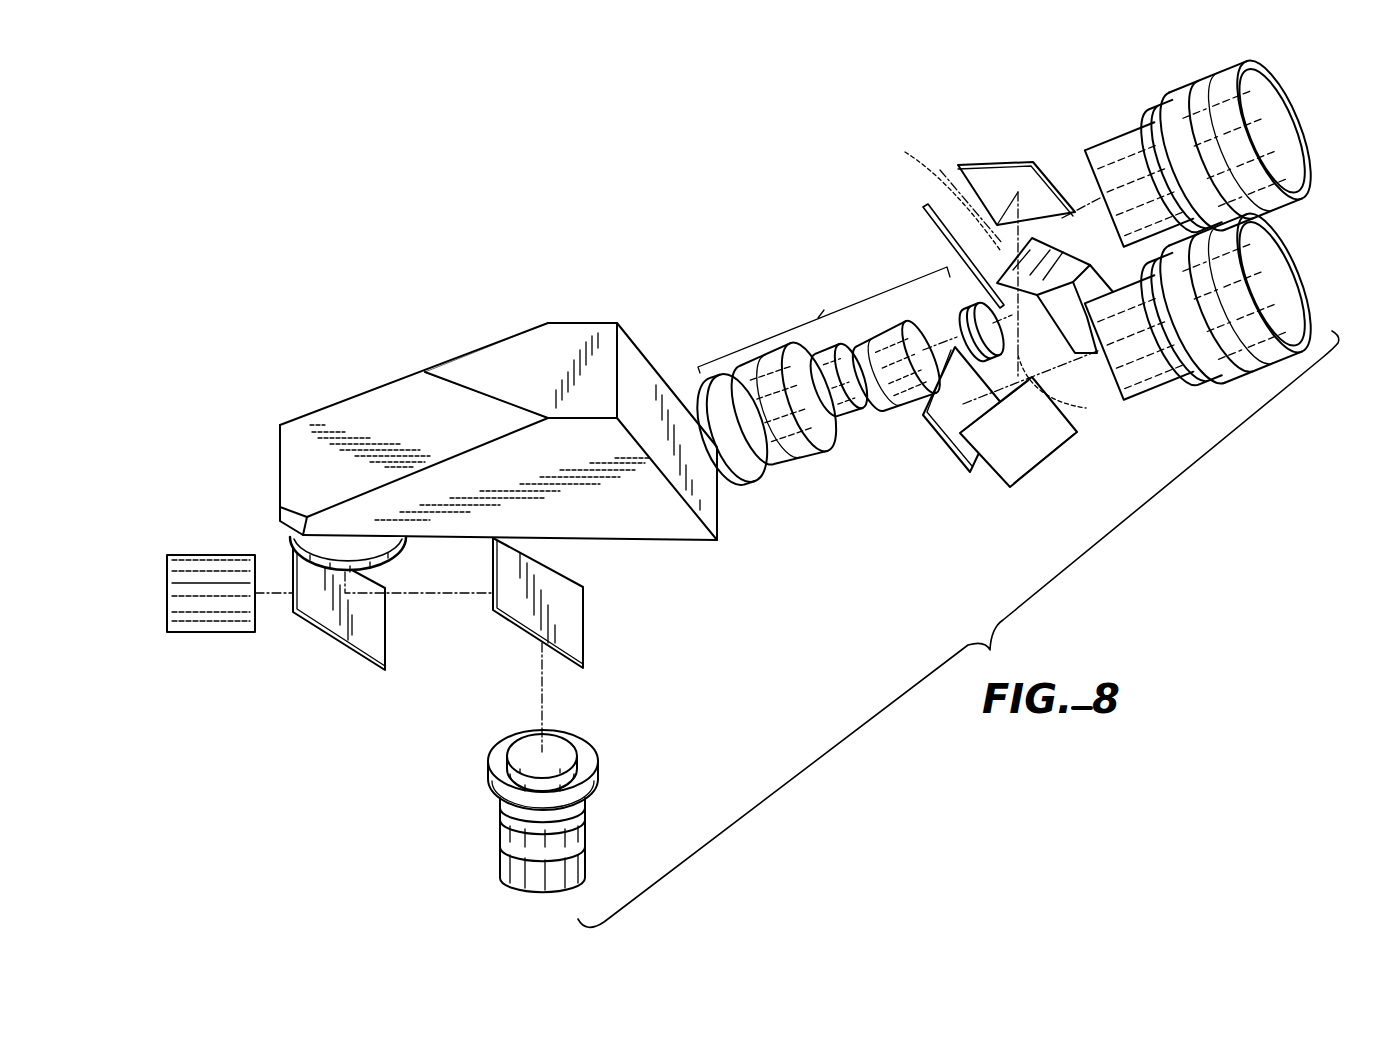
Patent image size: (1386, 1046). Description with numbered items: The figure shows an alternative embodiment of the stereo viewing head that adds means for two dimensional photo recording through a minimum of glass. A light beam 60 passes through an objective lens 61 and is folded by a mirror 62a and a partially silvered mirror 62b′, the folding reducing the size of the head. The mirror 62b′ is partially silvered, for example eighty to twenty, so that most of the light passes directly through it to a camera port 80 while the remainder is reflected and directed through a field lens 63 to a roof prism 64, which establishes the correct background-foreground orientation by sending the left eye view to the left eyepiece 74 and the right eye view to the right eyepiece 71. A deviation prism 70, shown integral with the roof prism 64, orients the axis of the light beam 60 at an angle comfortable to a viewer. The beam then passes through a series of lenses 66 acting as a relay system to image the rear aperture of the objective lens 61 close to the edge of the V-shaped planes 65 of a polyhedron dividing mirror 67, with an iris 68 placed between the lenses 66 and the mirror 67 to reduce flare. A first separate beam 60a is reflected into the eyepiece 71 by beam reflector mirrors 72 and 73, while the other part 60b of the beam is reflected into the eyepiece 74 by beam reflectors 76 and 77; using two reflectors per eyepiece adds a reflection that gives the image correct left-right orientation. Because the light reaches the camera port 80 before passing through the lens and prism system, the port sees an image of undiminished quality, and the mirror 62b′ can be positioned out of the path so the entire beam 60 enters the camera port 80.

The light beam 60 is at (546, 703).
The first separate beam 60a is at (931, 195).
The other part of the beam 60b is at (1073, 390).
The objective lens 61 is at (498, 818).
The mirror 62a is at (585, 635).
The partially silvered mirror 62b′ is at (335, 645).
The field lens 63 is at (292, 545).
The roof prism 64 is at (452, 358).
The V-shaped planes 65 is at (1045, 335).
The series of lenses 66 is at (817, 379).
The polyhedron dividing mirror 67 is at (968, 253).
The iris 68 is at (972, 316).
The deviation prism 70 is at (573, 342).
The right eyepiece 71 is at (1287, 92).
The beam reflector mirror 72 is at (1000, 162).
The beam reflector mirror 73 is at (923, 207).
The left eyepiece 74 is at (1290, 250).
The beam reflector 76 is at (1050, 462).
The beam reflector 77 is at (947, 445).
The camera port 80 is at (235, 633).